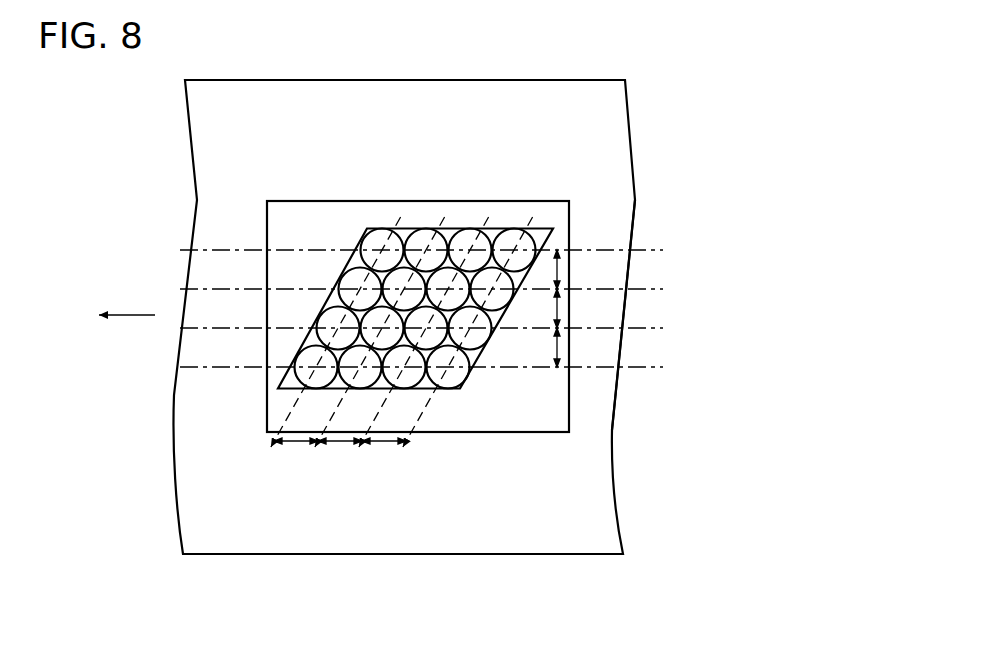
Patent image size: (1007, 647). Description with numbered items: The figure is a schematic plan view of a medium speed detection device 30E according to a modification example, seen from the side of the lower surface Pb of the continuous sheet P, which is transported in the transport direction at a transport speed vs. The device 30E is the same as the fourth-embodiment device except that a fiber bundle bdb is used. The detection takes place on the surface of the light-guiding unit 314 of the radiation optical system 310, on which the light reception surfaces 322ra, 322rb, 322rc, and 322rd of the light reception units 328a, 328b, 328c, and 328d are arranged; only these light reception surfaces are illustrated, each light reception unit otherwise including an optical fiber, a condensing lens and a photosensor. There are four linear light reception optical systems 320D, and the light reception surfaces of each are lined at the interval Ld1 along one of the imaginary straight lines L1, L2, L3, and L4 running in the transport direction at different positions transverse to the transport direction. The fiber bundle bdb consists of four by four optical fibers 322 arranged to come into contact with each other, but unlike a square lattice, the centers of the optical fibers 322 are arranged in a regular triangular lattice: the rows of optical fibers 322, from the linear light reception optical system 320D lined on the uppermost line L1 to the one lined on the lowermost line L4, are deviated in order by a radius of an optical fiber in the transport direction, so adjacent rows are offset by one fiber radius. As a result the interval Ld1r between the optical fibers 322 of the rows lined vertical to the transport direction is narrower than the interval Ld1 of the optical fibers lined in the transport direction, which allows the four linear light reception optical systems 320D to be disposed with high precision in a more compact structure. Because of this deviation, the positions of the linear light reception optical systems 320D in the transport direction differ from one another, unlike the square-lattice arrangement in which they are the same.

The medium speed detection device 30E is at (532, 233).
The continuous sheet P is at (580, 80).
The lower surface Pb is at (627, 130).
The light-guiding unit 314 is at (482, 296).
The radiation optical system 310 is at (593, 201).
The optical fiber 322 is at (435, 263).
The light reception surface 322ra is at (518, 228).
The light reception surface 322rb is at (470, 228).
The light reception surface 322rc is at (415, 228).
The light reception surface 322rd is at (372, 228).
The light reception unit 328a is at (547, 133).
The light reception unit 328b is at (490, 133).
The light reception unit 328c is at (410, 133).
The light reception unit 328d is at (353, 133).
The linear light reception optical system 320D is at (347, 240).
The fiber bundle bdb is at (460, 389).
The imaginary straight line L1 is at (441, 254).
The imaginary straight line L2 is at (441, 293).
The imaginary straight line L3 is at (441, 334).
The imaginary straight line L4 is at (441, 371).
The interval Ld1 is at (340, 455).
The interval Ld1r is at (600, 325).
The transport speed vs is at (93, 301).